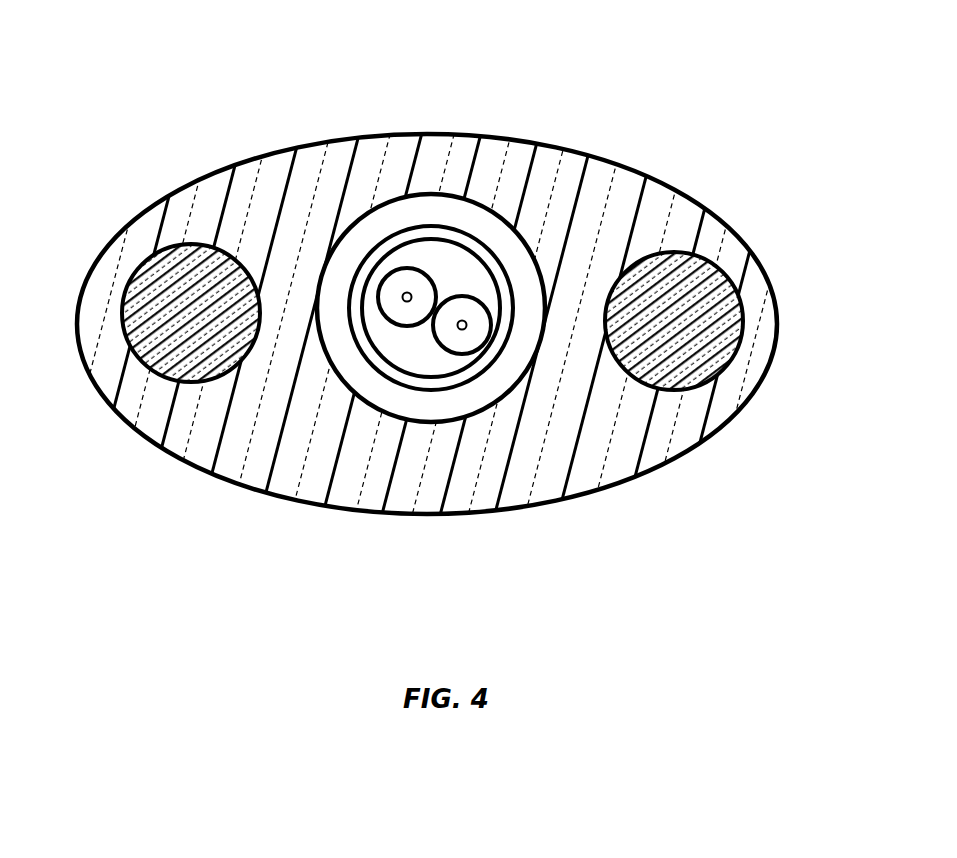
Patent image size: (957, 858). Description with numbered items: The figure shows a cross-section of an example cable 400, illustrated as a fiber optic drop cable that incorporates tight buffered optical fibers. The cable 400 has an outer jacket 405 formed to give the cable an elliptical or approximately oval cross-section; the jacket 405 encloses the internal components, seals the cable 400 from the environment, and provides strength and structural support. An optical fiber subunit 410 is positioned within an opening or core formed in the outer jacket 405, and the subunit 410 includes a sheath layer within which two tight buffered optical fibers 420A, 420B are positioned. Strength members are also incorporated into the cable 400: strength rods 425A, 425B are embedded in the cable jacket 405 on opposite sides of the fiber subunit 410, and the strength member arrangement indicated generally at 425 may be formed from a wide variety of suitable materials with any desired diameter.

The cable 400 is at (145, 108).
The outer jacket 405 is at (653, 198).
The optical fiber subunit 410 is at (427, 210).
The tight buffered optical fiber 420A is at (389, 338).
The tight buffered optical fiber 420B is at (441, 368).
The filler 425 is at (454, 410).
The strength rod 425A is at (110, 291).
The strength rod 425B is at (759, 296).